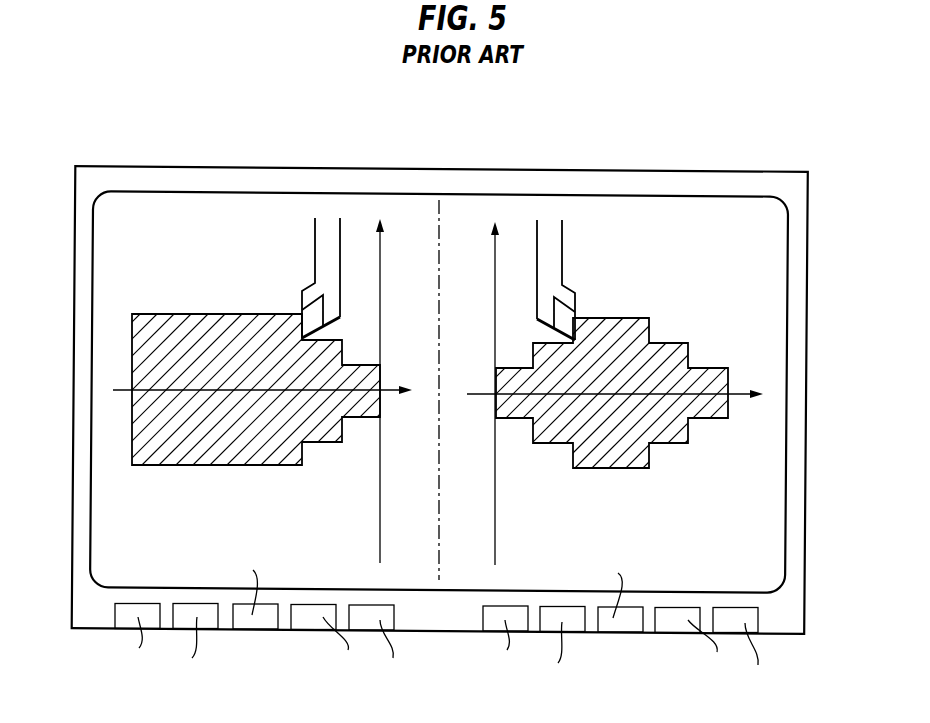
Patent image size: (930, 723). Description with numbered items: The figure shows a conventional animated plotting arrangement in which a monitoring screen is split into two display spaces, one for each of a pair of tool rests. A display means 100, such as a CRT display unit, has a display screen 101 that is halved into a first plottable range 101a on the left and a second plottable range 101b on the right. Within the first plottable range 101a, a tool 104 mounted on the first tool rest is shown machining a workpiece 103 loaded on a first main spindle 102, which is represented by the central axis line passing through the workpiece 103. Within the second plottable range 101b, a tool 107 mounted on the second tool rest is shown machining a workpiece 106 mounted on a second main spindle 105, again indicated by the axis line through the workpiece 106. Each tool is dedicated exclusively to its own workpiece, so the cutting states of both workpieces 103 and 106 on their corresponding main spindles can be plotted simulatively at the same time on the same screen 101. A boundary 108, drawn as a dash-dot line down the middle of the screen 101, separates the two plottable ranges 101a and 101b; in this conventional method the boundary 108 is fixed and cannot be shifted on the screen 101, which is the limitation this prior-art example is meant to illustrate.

The display means 100 is at (818, 238).
The display screen 101 is at (417, 220).
The first plottable range 101a is at (215, 214).
The second plottable range 101b is at (627, 212).
The first main spindle 102 is at (122, 392).
The workpiece 103 is at (230, 444).
The tool 104 is at (330, 265).
The second main spindle 105 is at (742, 398).
The workpiece 106 is at (615, 452).
The tool 107 is at (545, 268).
The boundary 108 is at (442, 242).